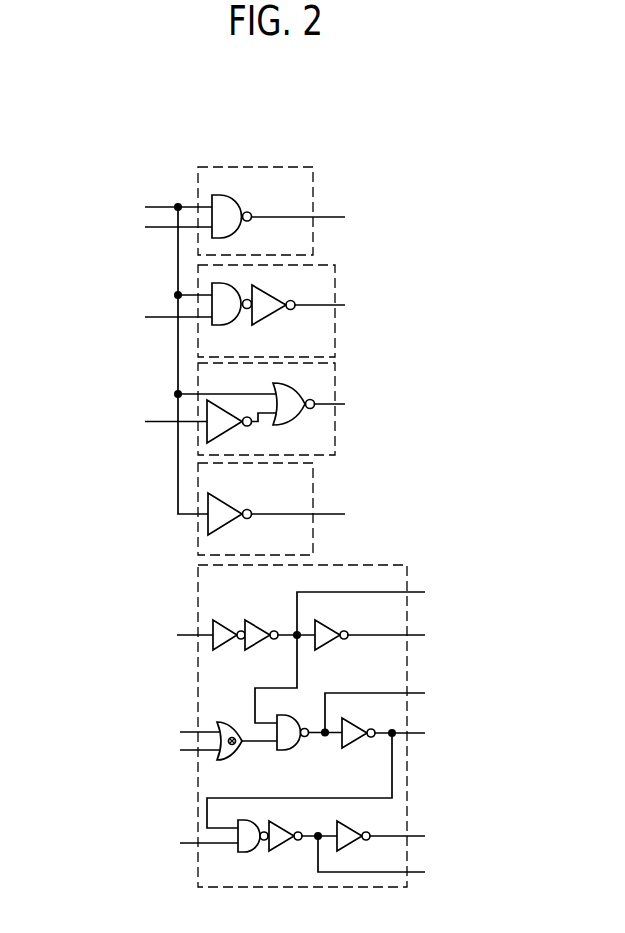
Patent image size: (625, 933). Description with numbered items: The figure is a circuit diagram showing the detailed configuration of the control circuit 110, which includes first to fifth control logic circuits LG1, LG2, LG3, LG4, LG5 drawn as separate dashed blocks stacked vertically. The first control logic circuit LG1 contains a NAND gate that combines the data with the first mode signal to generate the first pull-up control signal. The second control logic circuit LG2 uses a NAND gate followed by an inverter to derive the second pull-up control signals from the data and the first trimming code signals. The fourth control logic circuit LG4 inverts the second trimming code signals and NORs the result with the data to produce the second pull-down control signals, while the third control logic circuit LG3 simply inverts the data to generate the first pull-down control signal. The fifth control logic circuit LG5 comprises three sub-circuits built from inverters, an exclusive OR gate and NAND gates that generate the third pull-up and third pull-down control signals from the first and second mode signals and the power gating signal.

The control circuit 110 is at (227, 143).
The first control logic circuit LG1 is at (297, 203).
The second control logic circuit LG2 is at (330, 297).
The third control logic circuit LG3 is at (305, 496).
The fourth control logic circuit LG4 is at (333, 395).
The fifth control logic circuit LG5 is at (237, 602).